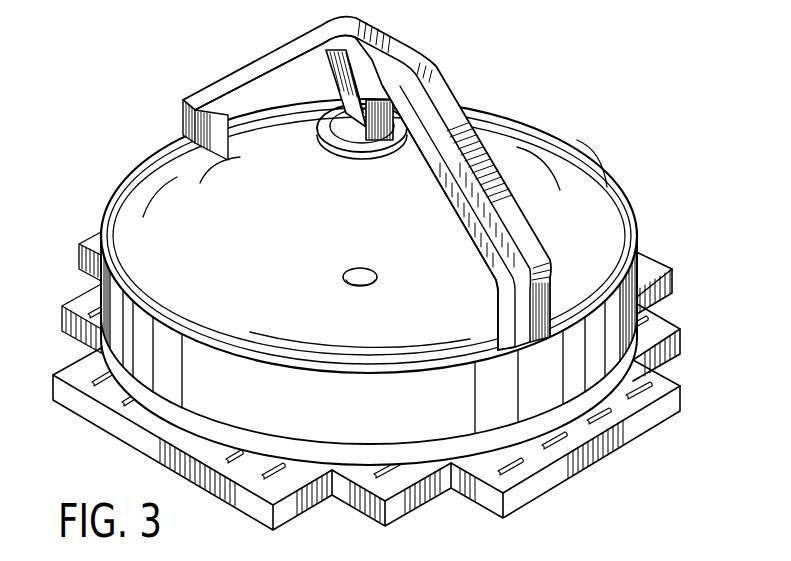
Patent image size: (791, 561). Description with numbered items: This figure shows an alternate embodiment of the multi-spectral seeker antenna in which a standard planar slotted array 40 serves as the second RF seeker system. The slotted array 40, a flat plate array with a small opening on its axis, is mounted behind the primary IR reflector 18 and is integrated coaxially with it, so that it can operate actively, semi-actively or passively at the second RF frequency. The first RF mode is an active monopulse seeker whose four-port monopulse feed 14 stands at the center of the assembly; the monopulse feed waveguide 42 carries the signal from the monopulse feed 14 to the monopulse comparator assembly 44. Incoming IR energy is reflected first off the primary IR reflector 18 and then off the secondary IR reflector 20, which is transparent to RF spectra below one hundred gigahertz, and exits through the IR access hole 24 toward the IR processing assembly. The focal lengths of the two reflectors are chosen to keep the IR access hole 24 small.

The four-port monopulse feed 14 is at (365, 88).
The primary IR reflector 18 is at (148, 192).
The secondary IR reflector 20 is at (347, 157).
The IR access hole 24 is at (343, 275).
The slotted array 40 is at (604, 452).
The monopulse feed waveguide 42 is at (453, 102).
The monopulse comparator assembly 44 is at (322, 457).